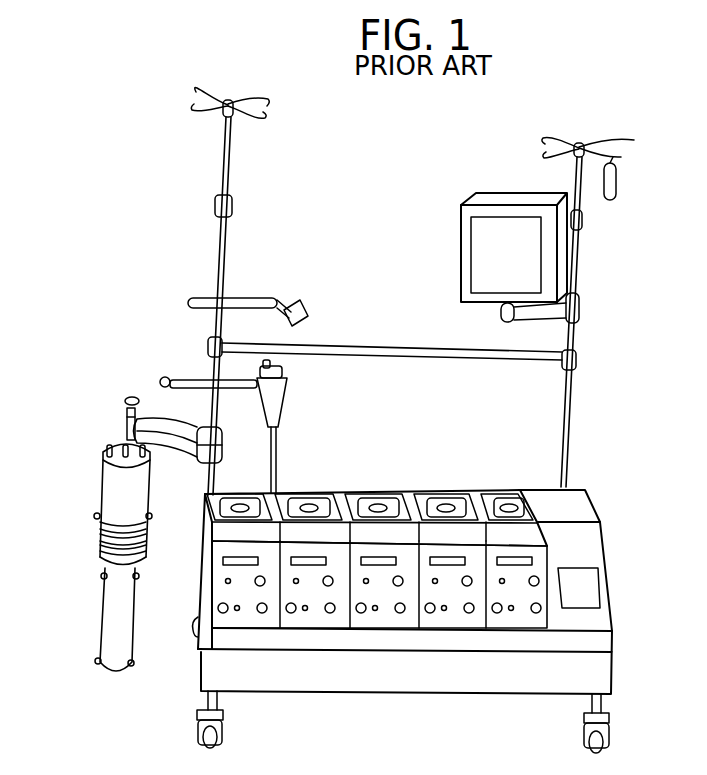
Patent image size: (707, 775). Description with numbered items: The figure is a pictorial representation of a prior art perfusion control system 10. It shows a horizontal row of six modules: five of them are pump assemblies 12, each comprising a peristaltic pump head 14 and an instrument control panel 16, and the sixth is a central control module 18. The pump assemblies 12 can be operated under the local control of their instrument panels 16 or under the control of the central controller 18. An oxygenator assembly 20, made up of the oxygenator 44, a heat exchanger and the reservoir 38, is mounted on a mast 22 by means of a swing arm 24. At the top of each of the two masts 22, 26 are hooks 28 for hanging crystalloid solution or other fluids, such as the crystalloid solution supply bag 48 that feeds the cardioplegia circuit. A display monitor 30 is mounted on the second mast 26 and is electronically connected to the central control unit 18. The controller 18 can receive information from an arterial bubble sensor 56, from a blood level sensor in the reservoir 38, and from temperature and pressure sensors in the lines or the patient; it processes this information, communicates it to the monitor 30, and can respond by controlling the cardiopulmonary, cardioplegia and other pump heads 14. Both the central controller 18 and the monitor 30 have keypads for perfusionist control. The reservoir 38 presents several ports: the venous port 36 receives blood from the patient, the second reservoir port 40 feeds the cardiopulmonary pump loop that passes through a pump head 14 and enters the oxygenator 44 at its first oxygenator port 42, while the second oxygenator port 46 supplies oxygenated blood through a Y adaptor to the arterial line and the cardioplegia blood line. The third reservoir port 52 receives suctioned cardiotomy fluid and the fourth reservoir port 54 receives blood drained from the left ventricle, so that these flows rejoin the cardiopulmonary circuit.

The prior art blood processing system 10 is at (411, 603).
The pump assembly 12 is at (195, 580).
The peristaltic pump head 14 is at (416, 493).
The instrument control panel 16 is at (524, 622).
The central control module 18 is at (607, 573).
The oxygenator assembly 20 is at (106, 543).
The mast 22 is at (230, 178).
The swing arm 24 is at (152, 420).
The mast 26 is at (572, 412).
The hooks 28 is at (245, 100).
The display monitor 30 is at (487, 195).
The venous port 36 is at (113, 445).
The reservoir 38 is at (108, 490).
The second reservoir port 40 is at (150, 517).
The first oxygenator port 42 is at (137, 577).
The oxygenator 44 is at (102, 615).
The second oxygenator port 46 is at (133, 664).
The crystalloid solution supply bag 48 is at (616, 182).
The third reservoir port 52 is at (105, 448).
The fourth reservoir port 54 is at (147, 448).
The arterial bubble sensor 56 is at (302, 303).